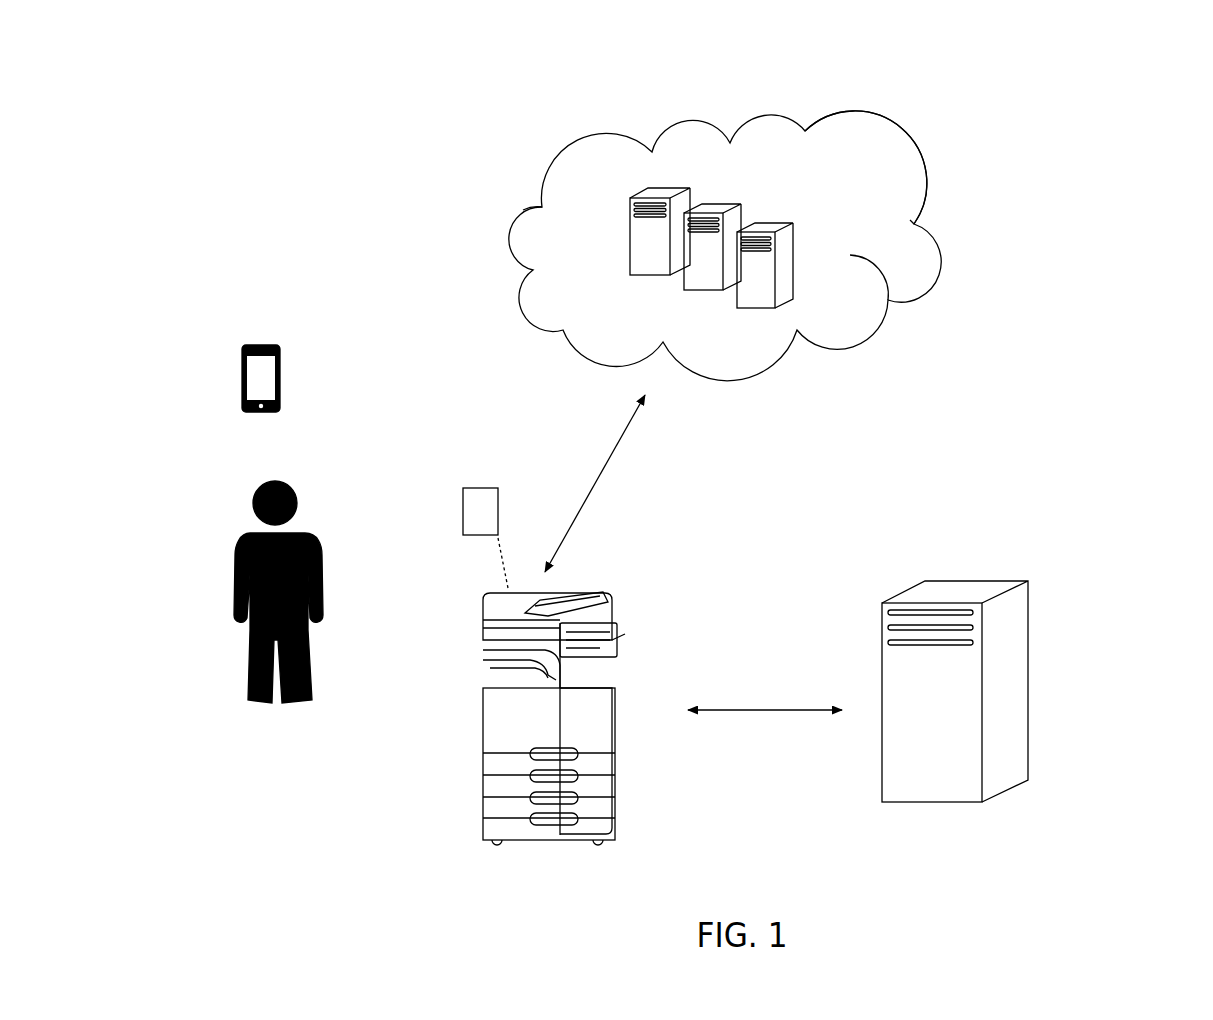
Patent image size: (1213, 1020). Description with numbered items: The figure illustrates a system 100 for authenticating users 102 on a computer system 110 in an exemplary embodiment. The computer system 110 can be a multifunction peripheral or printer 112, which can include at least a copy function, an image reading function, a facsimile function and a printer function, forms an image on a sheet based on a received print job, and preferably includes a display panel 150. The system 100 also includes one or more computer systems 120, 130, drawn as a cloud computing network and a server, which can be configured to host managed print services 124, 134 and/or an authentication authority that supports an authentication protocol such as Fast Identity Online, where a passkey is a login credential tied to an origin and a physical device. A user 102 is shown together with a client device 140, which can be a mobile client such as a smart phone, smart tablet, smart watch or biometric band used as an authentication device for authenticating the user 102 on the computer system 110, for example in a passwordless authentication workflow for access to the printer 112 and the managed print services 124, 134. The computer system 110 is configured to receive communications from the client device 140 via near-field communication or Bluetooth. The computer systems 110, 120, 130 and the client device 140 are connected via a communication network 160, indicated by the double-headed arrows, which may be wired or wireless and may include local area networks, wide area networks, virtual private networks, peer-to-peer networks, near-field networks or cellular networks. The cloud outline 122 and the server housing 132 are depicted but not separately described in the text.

The system 100 is at (1199, 76).
The user 102 is at (227, 505).
The computer system 110 is at (551, 750).
The multifunction peripheral (MFP) or printer 112 is at (456, 695).
The computer system 120 is at (605, 200).
The cloud 122 is at (838, 165).
The managed print services 124 is at (705, 152).
The computer system 130 is at (1016, 659).
The server housing 132 is at (1003, 736).
The managed print services 134 is at (945, 563).
The client device 140 is at (220, 373).
The display panel 150 is at (445, 490).
The communication network 160 is at (574, 451).